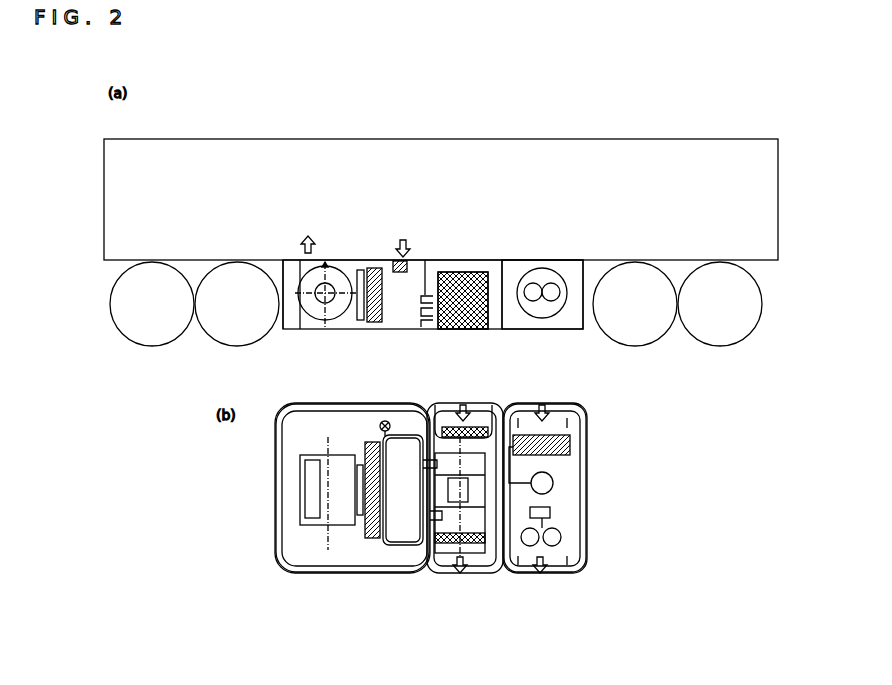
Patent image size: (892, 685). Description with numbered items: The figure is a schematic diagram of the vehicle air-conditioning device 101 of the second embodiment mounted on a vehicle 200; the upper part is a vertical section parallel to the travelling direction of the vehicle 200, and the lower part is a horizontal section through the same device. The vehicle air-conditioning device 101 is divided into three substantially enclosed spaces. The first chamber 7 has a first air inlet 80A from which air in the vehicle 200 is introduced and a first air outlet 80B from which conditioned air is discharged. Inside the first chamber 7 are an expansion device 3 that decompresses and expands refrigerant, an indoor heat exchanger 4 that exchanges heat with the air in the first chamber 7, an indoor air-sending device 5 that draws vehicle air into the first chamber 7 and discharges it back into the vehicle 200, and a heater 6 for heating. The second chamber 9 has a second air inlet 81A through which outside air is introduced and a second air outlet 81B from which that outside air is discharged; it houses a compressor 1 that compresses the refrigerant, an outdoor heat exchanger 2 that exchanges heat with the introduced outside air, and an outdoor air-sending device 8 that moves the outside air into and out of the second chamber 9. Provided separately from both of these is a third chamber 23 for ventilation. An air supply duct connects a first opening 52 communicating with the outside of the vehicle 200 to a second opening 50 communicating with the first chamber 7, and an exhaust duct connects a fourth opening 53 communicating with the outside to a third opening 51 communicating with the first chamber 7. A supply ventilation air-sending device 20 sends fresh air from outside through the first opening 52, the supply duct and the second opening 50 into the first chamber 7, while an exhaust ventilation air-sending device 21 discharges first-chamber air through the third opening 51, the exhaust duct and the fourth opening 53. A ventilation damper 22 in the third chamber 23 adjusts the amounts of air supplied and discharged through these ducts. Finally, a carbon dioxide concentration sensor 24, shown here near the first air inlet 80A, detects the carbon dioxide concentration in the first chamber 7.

The vehicle 200 is at (680, 160).
The vehicle air-conditioning device 101 is at (503, 256).
The first air inlet 80A is at (415, 262).
The first air outlet 80B is at (311, 255).
The carbon dioxide concentration sensor 24 is at (393, 258).
The first chamber 7 is at (282, 330).
The indoor air-sending device 5 is at (302, 308).
The heater 6 is at (360, 321).
The indoor heat exchanger 4 is at (376, 323).
The ventilation damper 22 is at (476, 330).
The third chamber 23 is at (490, 331).
The second chamber 9 is at (530, 330).
The outdoor air-sending device 8 is at (556, 310).
The expansion device 3 is at (392, 424).
The third opening 51 is at (392, 546).
The second opening 50 is at (441, 412).
The first opening 52 is at (456, 425).
The fourth opening 53 is at (446, 573).
The supply ventilation air-sending device 20 is at (521, 400).
The exhaust ventilation air-sending device 21 is at (495, 560).
The second air inlet 81A is at (548, 412).
The second air outlet 81B is at (536, 576).
The outdoor heat exchanger 2 is at (572, 442).
The compressor 1 is at (555, 483).